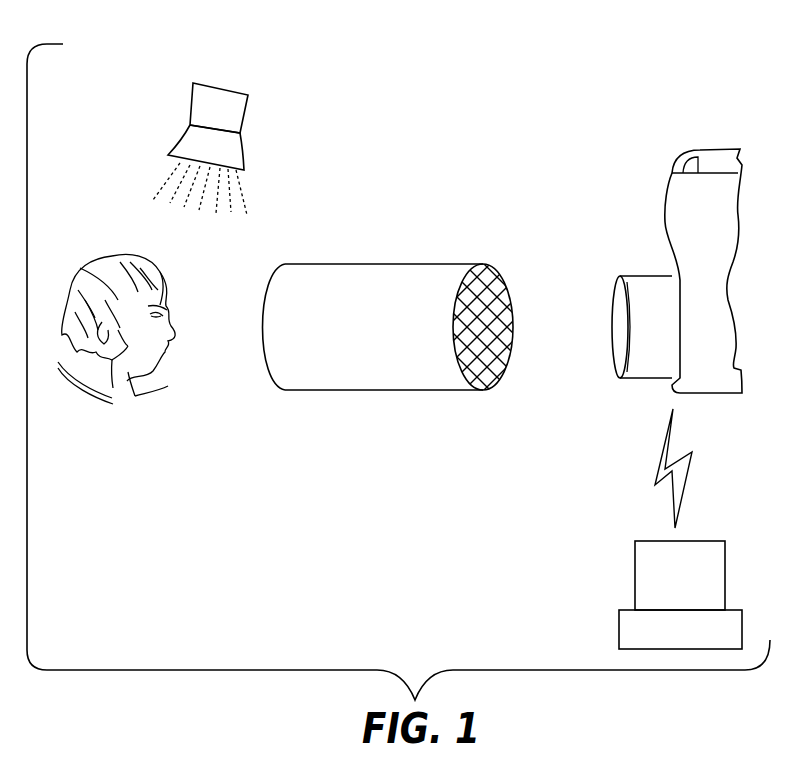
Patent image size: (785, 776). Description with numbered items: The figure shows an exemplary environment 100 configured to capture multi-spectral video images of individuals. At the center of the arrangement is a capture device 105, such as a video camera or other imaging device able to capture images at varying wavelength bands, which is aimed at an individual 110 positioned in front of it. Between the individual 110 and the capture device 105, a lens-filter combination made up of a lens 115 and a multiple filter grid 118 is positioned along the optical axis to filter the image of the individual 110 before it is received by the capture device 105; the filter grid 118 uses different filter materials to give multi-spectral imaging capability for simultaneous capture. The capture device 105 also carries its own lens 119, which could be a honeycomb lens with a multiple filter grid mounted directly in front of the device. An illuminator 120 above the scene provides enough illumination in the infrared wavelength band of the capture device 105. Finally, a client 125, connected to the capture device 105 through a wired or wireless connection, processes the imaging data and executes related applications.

The environment 100 is at (349, 67).
The capture device 105 is at (671, 188).
The individual 110 is at (112, 255).
The lens 115 is at (378, 263).
The multiple filter grid 118 is at (494, 278).
The lens 119 is at (618, 312).
The illuminator 120 is at (190, 102).
The client 125 is at (635, 577).